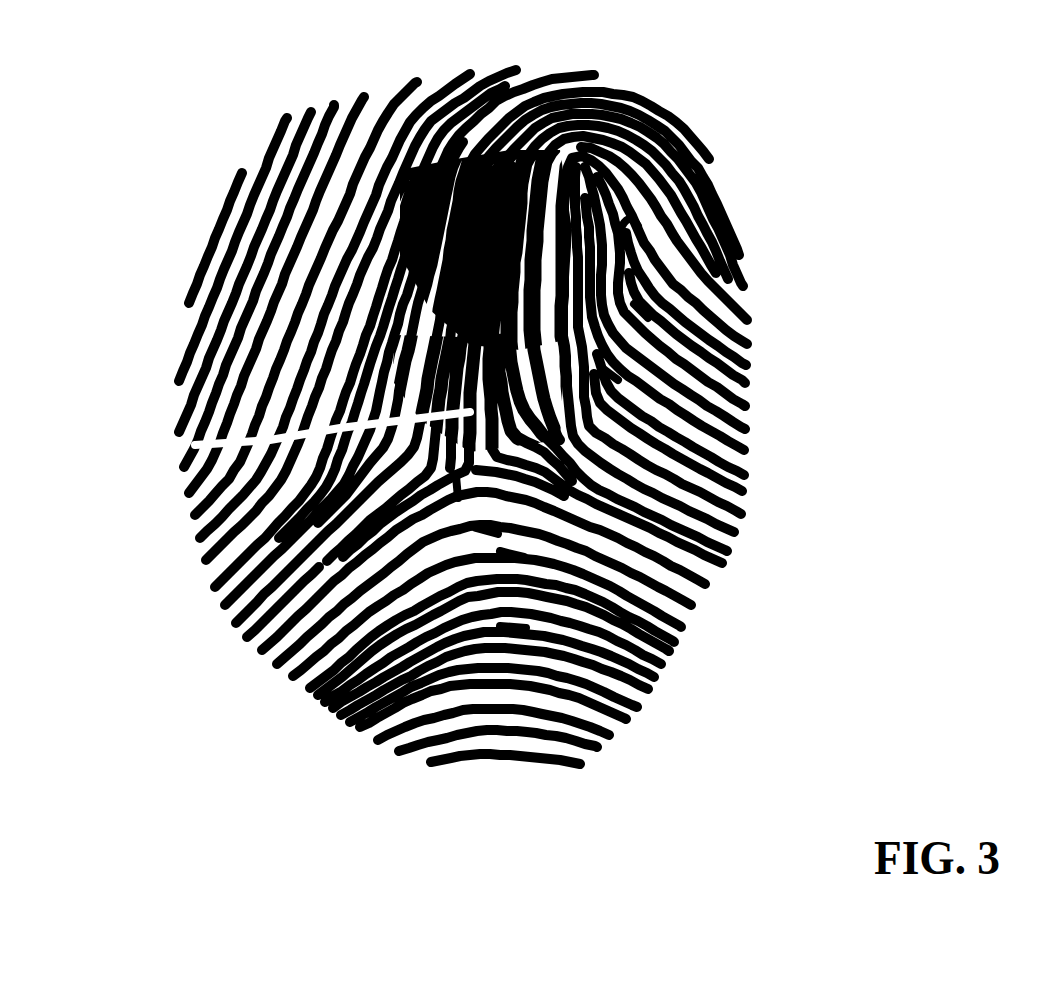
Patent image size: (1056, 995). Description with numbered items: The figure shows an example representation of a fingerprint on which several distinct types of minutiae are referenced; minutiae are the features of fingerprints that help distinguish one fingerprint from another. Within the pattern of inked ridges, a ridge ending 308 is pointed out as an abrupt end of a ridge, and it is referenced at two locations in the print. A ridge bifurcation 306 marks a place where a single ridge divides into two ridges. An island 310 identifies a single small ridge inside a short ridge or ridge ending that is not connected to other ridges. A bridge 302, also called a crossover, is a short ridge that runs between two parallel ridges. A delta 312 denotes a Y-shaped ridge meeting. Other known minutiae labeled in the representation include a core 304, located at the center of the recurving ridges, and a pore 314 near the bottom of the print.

The bridge 302 is at (442, 170).
The core 304 is at (632, 224).
The ridge bifurcation 306 is at (640, 312).
The ridge ending 308 is at (610, 374).
The island 310 is at (486, 531).
The delta 312 is at (512, 554).
The pore 314 is at (513, 628).